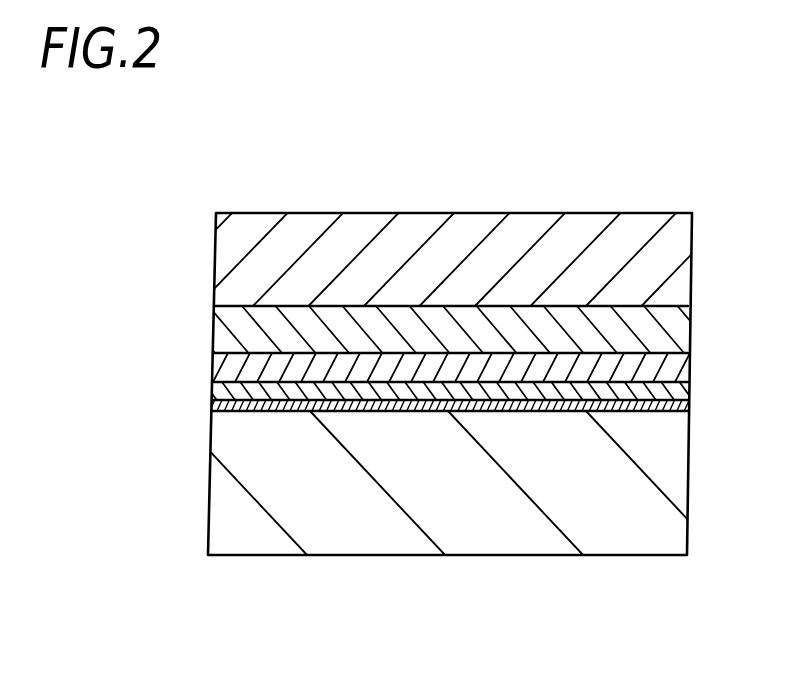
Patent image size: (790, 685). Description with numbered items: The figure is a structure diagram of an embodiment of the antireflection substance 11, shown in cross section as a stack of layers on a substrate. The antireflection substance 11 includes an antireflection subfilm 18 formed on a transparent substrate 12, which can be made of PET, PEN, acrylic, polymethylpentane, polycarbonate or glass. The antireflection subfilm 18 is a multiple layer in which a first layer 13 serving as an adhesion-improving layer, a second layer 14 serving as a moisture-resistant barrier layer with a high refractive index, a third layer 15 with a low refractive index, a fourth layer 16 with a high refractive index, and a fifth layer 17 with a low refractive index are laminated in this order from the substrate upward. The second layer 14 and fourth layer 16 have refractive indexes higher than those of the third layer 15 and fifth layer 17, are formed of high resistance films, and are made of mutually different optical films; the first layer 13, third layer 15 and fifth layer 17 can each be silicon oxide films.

The antireflection substance 11 is at (313, 153).
The transparent substrate 12 is at (428, 483).
The first layer 13 is at (417, 423).
The second layer 14 is at (424, 397).
The third layer 15 is at (413, 367).
The fourth layer 16 is at (444, 329).
The fifth layer 17 is at (462, 259).
The antireflection subfilm 18 is at (132, 232).